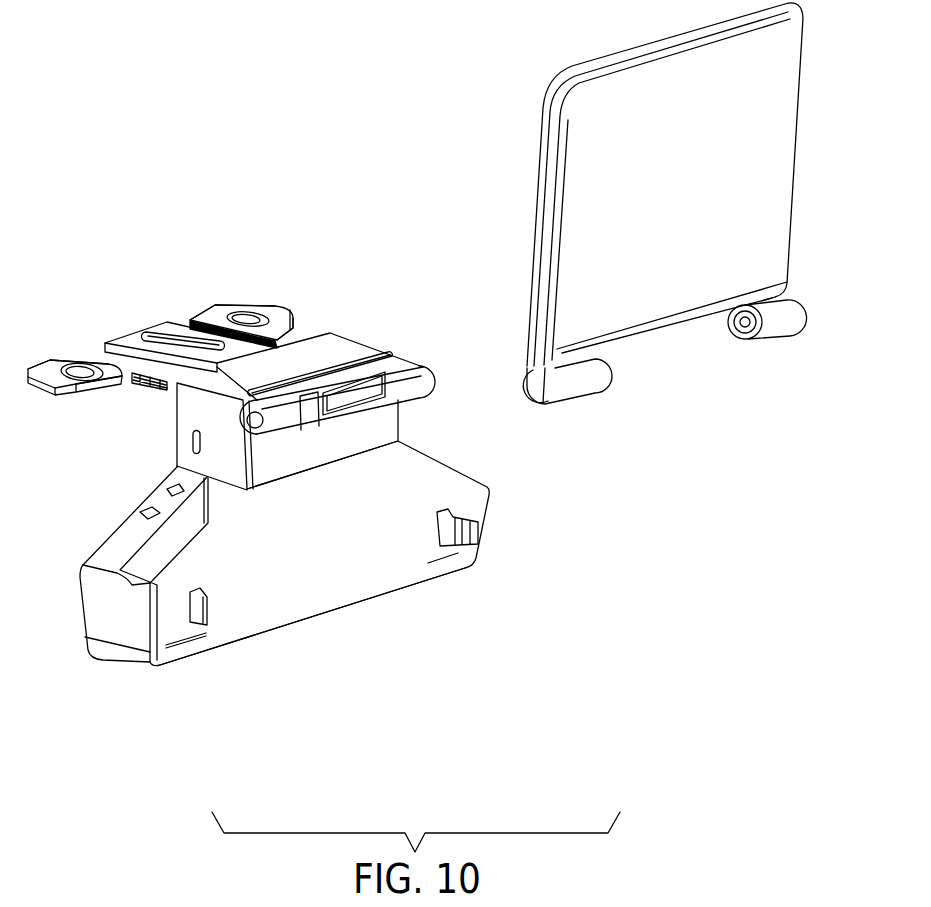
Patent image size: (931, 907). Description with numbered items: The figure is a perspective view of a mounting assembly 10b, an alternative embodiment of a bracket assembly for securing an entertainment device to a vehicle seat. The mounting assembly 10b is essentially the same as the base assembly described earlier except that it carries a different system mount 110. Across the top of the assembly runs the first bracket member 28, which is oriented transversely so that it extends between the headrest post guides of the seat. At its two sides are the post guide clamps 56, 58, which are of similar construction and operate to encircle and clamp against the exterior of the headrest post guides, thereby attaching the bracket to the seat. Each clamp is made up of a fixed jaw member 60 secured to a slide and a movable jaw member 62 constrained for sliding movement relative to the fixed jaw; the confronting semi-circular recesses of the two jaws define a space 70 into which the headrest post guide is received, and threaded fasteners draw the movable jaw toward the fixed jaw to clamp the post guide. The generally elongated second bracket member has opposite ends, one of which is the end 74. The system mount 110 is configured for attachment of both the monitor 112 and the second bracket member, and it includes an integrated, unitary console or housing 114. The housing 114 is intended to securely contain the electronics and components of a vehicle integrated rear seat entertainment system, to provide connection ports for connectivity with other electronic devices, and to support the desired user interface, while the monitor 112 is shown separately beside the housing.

The mounting assembly 10b is at (263, 249).
The first bracket member 28 is at (150, 384).
The post guide clamp 56 is at (57, 390).
The post guide clamp 58 is at (268, 305).
The fixed jaw member 60 is at (215, 306).
The movable jaw member 62 is at (297, 320).
The space 70 is at (246, 309).
The end 74 is at (150, 340).
The system mount 110 is at (178, 451).
The monitor 112 is at (535, 247).
The housing 114 is at (365, 543).